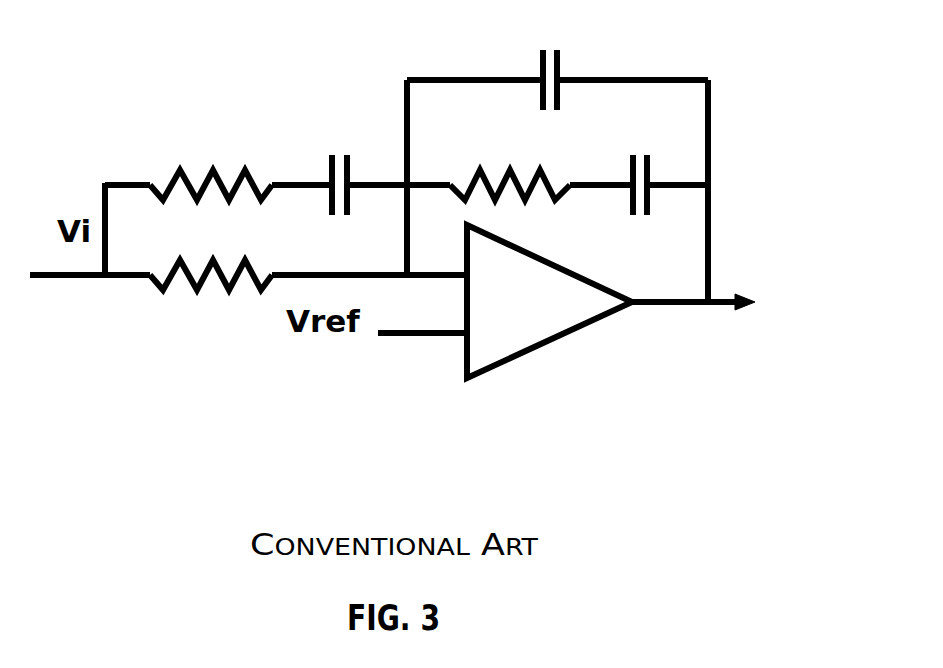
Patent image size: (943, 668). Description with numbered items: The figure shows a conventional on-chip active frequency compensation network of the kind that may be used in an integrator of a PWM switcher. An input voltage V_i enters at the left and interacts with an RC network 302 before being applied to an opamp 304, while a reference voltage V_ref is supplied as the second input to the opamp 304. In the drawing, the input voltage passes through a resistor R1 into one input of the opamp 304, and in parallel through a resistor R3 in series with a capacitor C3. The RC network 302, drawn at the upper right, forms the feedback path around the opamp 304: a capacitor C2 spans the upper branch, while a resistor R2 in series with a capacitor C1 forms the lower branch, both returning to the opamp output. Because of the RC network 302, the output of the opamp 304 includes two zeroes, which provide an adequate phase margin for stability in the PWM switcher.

The RC network 302 is at (643, 154).
The opamp 304 is at (523, 353).
The input resistor R1 is at (211, 300).
The feedback resistor R2 is at (510, 163).
The resistor R3 is at (211, 162).
The feedback capacitor C1 is at (642, 161).
The feedback capacitor C2 is at (551, 58).
The capacitor C3 is at (335, 163).